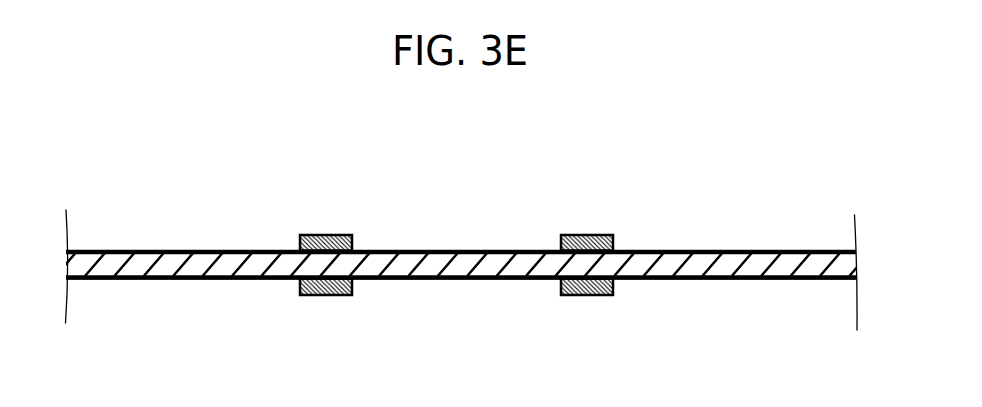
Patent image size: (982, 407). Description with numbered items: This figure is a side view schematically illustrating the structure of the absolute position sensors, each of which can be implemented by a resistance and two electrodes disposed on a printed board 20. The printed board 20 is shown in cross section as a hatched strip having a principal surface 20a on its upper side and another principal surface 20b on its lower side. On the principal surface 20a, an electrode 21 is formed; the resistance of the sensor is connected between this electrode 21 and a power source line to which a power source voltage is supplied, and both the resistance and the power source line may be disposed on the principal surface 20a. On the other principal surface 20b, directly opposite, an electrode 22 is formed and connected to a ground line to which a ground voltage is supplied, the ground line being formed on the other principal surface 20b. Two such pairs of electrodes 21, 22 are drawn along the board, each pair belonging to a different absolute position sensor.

The printed board 20 is at (82, 258).
The principal surface 20a is at (833, 250).
The other principal surface 20b is at (835, 280).
The electrode 21 is at (319, 235).
The electrode 22 is at (319, 295).